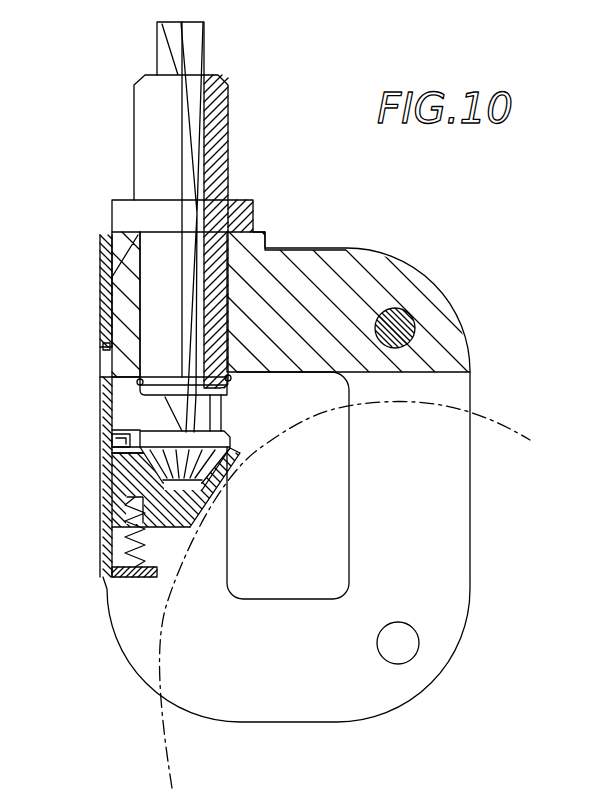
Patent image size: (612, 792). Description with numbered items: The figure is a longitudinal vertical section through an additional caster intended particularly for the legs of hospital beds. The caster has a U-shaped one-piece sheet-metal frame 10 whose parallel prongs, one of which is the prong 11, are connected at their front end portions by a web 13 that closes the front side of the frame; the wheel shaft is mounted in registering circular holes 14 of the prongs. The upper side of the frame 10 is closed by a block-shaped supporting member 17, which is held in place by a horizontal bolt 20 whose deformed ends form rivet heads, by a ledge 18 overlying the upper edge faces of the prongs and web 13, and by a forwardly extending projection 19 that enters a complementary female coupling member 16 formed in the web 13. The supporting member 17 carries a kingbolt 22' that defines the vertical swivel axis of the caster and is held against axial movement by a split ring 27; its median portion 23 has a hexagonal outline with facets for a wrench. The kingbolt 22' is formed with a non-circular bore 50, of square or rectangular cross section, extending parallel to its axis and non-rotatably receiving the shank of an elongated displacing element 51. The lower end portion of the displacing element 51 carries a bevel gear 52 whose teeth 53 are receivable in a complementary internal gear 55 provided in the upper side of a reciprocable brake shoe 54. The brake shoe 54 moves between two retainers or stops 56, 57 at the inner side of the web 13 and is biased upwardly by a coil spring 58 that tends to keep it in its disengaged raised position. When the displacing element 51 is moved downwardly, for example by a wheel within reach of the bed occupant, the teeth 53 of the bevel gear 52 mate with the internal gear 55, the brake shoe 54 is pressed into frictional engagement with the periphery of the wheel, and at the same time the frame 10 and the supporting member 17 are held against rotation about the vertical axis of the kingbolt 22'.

The U-shaped frame 10 is at (485, 390).
The prong 11 is at (390, 503).
The web 13 is at (103, 503).
The circular hole 14 is at (405, 645).
The female coupling member 16 is at (103, 343).
The supporting member 17 is at (340, 272).
The ledge 18 is at (120, 243).
The projection 19 is at (113, 366).
The bolt 20 is at (400, 318).
The kingbolt 22' is at (111, 199).
The median portion 23 is at (253, 200).
The split ring 27 is at (137, 382).
The non-circular bore 50 is at (203, 147).
The displacing element 51 is at (198, 50).
The bevel gear 52 is at (110, 430).
The teeth 53 is at (225, 432).
The brake shoe 54 is at (112, 475).
The internal gear 55 is at (227, 473).
The retainer 56 is at (112, 447).
The retainer 57 is at (108, 573).
The coil spring 58 is at (120, 543).